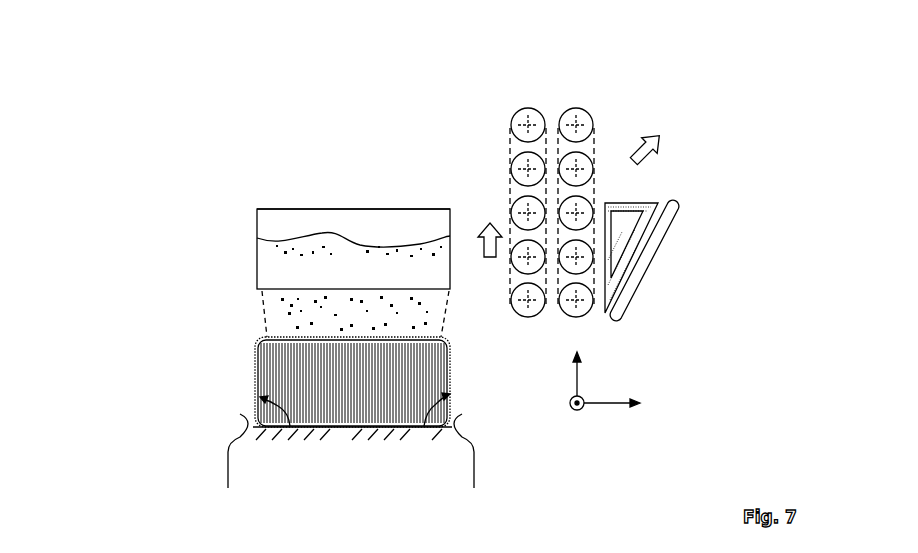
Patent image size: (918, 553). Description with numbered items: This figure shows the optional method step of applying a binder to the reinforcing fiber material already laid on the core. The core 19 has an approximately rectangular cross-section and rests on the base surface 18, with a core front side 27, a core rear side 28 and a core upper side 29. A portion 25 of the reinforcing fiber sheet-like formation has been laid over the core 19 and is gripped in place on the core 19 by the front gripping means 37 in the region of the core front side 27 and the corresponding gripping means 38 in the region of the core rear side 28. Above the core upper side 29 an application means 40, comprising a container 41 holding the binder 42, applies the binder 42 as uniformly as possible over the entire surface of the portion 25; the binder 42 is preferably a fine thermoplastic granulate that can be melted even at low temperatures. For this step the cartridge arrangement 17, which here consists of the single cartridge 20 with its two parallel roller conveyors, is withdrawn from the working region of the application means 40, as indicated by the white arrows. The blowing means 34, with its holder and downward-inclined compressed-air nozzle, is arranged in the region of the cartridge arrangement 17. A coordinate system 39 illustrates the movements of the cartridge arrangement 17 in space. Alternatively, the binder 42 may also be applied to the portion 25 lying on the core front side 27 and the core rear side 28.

The cartridge arrangement 17 is at (569, 159).
The cartridge 20 is at (536, 212).
The blowing means 34 is at (618, 191).
The application means 40 is at (294, 200).
The container 41 is at (257, 224).
The binder 42 is at (341, 271).
The core upper side 29 is at (293, 338).
The portion 25 is at (294, 382).
The core 19 is at (340, 393).
The core front side 27 is at (290, 427).
The core rear side 28 is at (424, 427).
The base surface 18 is at (340, 428).
The front gripping means 37 is at (228, 456).
The gripping means 38 is at (474, 458).
The coordinate system 39 is at (584, 399).